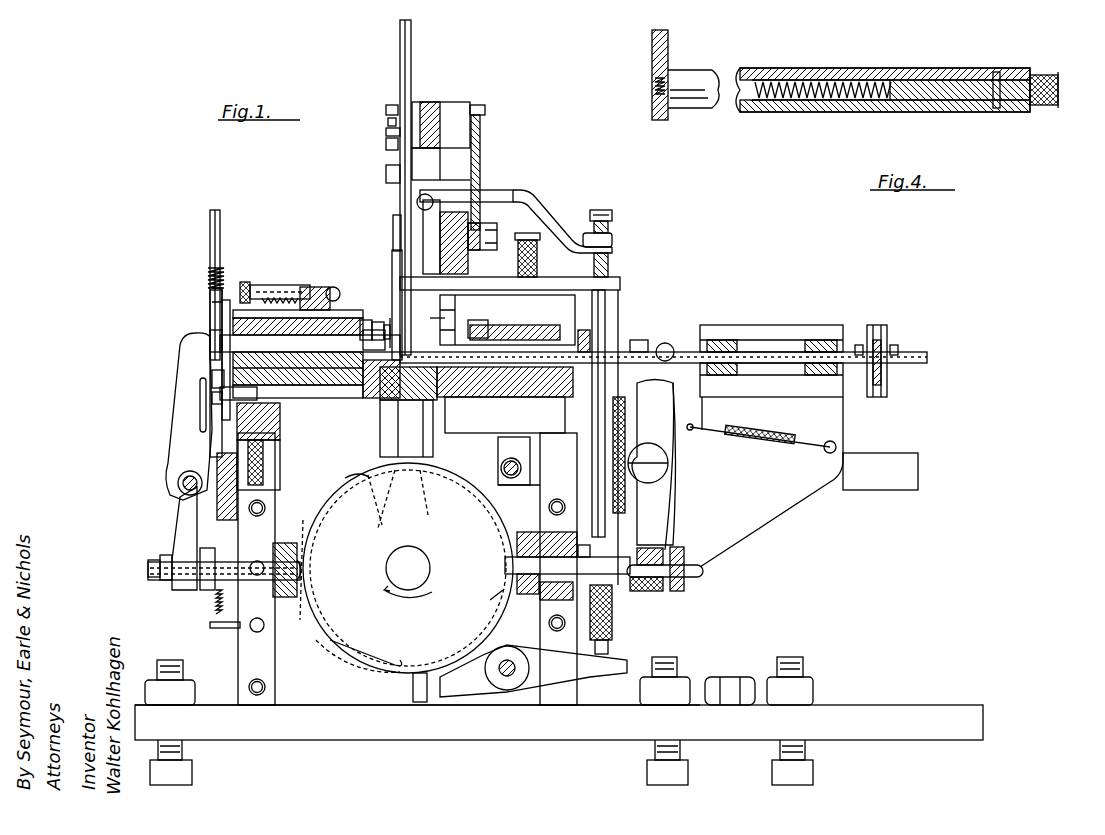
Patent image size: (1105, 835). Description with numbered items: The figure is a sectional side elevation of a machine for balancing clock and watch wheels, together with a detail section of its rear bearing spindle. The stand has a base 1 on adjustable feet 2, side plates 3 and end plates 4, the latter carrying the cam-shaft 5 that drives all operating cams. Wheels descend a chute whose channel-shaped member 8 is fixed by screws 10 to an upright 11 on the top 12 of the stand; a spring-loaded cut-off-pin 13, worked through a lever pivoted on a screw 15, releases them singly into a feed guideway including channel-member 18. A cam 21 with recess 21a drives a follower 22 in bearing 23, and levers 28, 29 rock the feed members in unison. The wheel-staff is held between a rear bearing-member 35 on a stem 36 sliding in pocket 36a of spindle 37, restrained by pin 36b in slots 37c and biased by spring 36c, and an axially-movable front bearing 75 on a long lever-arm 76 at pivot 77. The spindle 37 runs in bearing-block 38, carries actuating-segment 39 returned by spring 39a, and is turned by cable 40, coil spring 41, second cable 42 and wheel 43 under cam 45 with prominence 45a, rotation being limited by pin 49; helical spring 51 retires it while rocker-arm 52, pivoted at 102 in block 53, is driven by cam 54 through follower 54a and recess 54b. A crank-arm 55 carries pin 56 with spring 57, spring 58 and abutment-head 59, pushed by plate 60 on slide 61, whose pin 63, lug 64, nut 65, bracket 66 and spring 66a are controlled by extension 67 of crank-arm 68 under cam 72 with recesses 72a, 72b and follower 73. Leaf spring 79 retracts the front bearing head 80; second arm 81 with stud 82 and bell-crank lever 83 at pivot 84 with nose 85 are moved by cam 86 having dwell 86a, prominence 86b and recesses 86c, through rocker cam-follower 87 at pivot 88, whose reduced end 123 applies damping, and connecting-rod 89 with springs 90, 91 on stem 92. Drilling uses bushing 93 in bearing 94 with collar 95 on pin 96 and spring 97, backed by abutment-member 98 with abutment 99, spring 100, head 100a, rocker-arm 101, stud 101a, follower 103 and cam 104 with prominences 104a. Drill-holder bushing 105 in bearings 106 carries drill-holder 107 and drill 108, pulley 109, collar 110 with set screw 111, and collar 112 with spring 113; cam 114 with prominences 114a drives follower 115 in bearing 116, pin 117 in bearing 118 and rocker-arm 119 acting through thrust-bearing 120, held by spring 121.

In FIG. 1, the base 1 is at (898, 705).
In FIG. 1, the adjustable feet 2 is at (192, 770).
In FIG. 1, the side plates 3 is at (245, 657).
In FIG. 1, the end plates 4 is at (325, 703).
In FIG. 1, the cam-shaft 5 is at (426, 570).
In FIG. 1, the channel-shaped chute member 8 is at (412, 48).
In FIG. 1, the screws 10 is at (386, 108).
In FIG. 1, the upright 11 is at (455, 105).
In FIG. 1, the top of the stand 12 is at (540, 416).
In FIG. 1, the cut-off-pin 13 is at (388, 120).
In FIG. 1, the screw 15 is at (386, 137).
In FIG. 1, the channel-member 18 is at (393, 233).
In FIG. 1, the cam 21 is at (380, 478).
In FIG. 1, the recess 21a is at (379, 538).
In FIG. 1, the follower 22 is at (433, 492).
In FIG. 1, the bearing 23 is at (375, 462).
In FIG. 1, the lever 28 is at (478, 230).
In FIG. 1, the lever 29 is at (510, 207).
In FIG. 1, the rear bearing-member 35 is at (310, 367).
In FIG. 4, the rear bearing-member 35 is at (1040, 76).
In FIG. 1, the stem 36 is at (298, 319).
In FIG. 4, the stem 36 is at (945, 82).
In FIG. 4, the elongated pocket 36a is at (912, 100).
In FIG. 4, the pin 36b is at (998, 108).
In FIG. 4, the spring 36c is at (785, 80).
In FIG. 1, the spindle 37 is at (335, 387).
In FIG. 4, the spindle 37 is at (868, 80).
In FIG. 4, the slots 37c is at (996, 72).
In FIG. 1, the bearing-block 38 is at (345, 398).
In FIG. 1, the actuating-segment 39 is at (208, 322).
In FIG. 4, the actuating-segment 39 is at (670, 48).
In FIG. 1, the spring 39a is at (212, 347).
In FIG. 1, the cable 40 is at (222, 330).
In FIG. 1, the coil spring 41 is at (210, 263).
In FIG. 1, the second cable 42 is at (222, 232).
In FIG. 1, the wheel 43 is at (208, 222).
In FIG. 1, the cam 45 is at (380, 668).
In FIG. 1, the prominence 45a is at (383, 638).
In FIG. 1, the pin 49 is at (210, 295).
In FIG. 1, the helical spring 51 is at (295, 387).
In FIG. 1, the rocker-arm 52 is at (212, 377).
In FIG. 1, the block 53 is at (198, 503).
In FIG. 1, the cam 54 is at (305, 555).
In FIG. 1, the follower 54a is at (210, 560).
In FIG. 1, the recess 54b is at (305, 572).
In FIG. 1, the crank-arm 55 is at (372, 320).
In FIG. 1, the pin 56 is at (382, 323).
In FIG. 1, the spring 57 is at (374, 356).
In FIG. 1, the spring 58 is at (390, 320).
In FIG. 1, the abutment-head 59 is at (358, 318).
In FIG. 1, the transverse plate 60 is at (352, 320).
In FIG. 1, the slide 61 is at (246, 285).
In FIG. 1, the pin 63 is at (272, 285).
In FIG. 1, the lug 64 is at (312, 287).
In FIG. 1, the nut 65 is at (208, 275).
In FIG. 1, the bracket 66 is at (256, 284).
In FIG. 1, the spring 66a is at (262, 284).
In FIG. 1, the extension 67 is at (330, 288).
In FIG. 1, the crank-arm 68 is at (292, 290).
In FIG. 1, the cam 72 is at (432, 676).
In FIG. 1, the recess 72a is at (372, 650).
In FIG. 1, the recess 72b is at (446, 631).
In FIG. 1, the follower 73 is at (403, 555).
In FIG. 1, the front bearing 75 is at (442, 325).
In FIG. 1, the lever-arm 76 is at (490, 236).
In FIG. 1, the pivot 77 is at (480, 190).
In FIG. 1, the leaf spring 79 is at (458, 313).
In FIG. 1, the abutment-head 80 is at (488, 325).
In FIG. 1, the second arm 81 is at (500, 215).
In FIG. 1, the stud 82 is at (598, 210).
In FIG. 1, the bell-crank lever 83 is at (494, 316).
In FIG. 1, the pivot 84 is at (458, 282).
In FIG. 1, the abutment 85 is at (530, 330).
In FIG. 1, the cam 86 is at (412, 503).
In FIG. 1, the dwell 86a is at (345, 668).
In FIG. 1, the prominence 86b is at (422, 692).
In FIG. 1, the recesses 86c is at (497, 597).
In FIG. 1, the rocker cam-follower 87 is at (412, 697).
In FIG. 1, the pivot 88 is at (500, 660).
In FIG. 1, the connecting-rod 89 is at (606, 305).
In FIG. 1, the spring 90 is at (668, 488).
In FIG. 1, the spring 91 is at (537, 261).
In FIG. 1, the fixed stem 92 is at (518, 310).
In FIG. 1, the bushing 93 is at (470, 392).
In FIG. 1, the supporting-bearing 94 is at (500, 392).
In FIG. 1, the collar 95 is at (580, 332).
In FIG. 1, the fixed pin 96 is at (558, 433).
In FIG. 1, the spring 97 is at (568, 357).
In FIG. 1, the abutment-member 98 is at (300, 400).
In FIG. 1, the abutment 99 is at (368, 398).
In FIG. 1, the spring 100 is at (200, 408).
In FIG. 1, the head 100a is at (208, 396).
In FIG. 1, the rocker-arm 101 is at (192, 410).
In FIG. 1, the adjustable stud 101a is at (152, 562).
In FIG. 1, the pivot 102 is at (180, 470).
In FIG. 1, the follower 103 is at (210, 593).
In FIG. 1, the cam 104 is at (293, 462).
In FIG. 1, the prominences 104a is at (348, 478).
In FIG. 1, the drill-holder bushing 105 is at (765, 378).
In FIG. 1, the bearings 106 is at (740, 340).
In FIG. 1, the drill-holder 107 is at (930, 357).
In FIG. 1, the drill 108 is at (425, 412).
In FIG. 1, the pulley 109 is at (887, 392).
In FIG. 1, the collar 110 is at (890, 345).
In FIG. 1, the set screw 111 is at (858, 345).
In FIG. 1, the collar 112 is at (650, 352).
In FIG. 1, the spring 113 is at (606, 352).
In FIG. 1, the cam 114 is at (308, 592).
In FIG. 1, the prominences 114a is at (310, 590).
In FIG. 1, the follower 115 is at (618, 577).
In FIG. 1, the bearing 116 is at (500, 557).
In FIG. 1, the spring-loaded pin 117 is at (703, 563).
In FIG. 1, the bearing 118 is at (686, 590).
In FIG. 1, the rocker-arm 119 is at (675, 467).
In FIG. 1, the thrust-bearing 120 is at (662, 352).
In FIG. 1, the spring 121 is at (752, 446).
In FIG. 1, the reduced end 123 is at (420, 680).